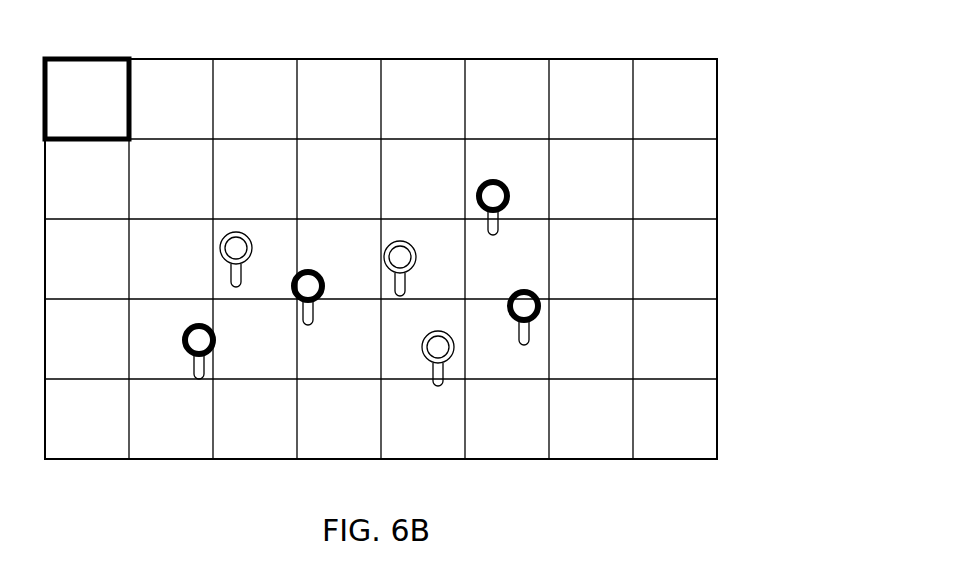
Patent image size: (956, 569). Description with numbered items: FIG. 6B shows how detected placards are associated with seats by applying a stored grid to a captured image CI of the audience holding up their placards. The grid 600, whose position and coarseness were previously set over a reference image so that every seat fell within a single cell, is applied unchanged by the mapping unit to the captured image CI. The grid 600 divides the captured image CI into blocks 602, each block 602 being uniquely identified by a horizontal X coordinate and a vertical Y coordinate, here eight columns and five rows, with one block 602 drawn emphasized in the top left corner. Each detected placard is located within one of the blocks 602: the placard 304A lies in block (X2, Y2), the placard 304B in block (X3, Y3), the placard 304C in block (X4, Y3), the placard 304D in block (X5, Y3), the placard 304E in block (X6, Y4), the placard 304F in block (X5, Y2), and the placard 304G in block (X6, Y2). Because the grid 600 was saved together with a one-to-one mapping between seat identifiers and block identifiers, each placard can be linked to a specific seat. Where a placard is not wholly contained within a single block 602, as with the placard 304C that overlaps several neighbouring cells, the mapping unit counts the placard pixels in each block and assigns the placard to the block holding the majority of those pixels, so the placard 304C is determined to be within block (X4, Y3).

The grid 600 is at (635, 87).
The block 602 is at (113, 109).
The captured image CI is at (719, 183).
The placard 304A is at (210, 357).
The placard 304B is at (234, 232).
The placard 304C is at (316, 304).
The placard 304D is at (397, 242).
The placard 304E is at (493, 180).
The placard 304F is at (448, 357).
The placard 304G is at (530, 290).